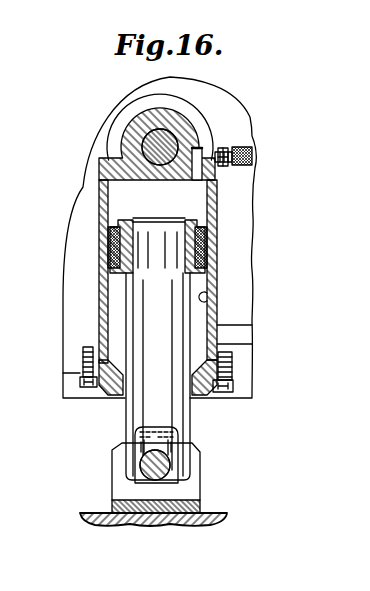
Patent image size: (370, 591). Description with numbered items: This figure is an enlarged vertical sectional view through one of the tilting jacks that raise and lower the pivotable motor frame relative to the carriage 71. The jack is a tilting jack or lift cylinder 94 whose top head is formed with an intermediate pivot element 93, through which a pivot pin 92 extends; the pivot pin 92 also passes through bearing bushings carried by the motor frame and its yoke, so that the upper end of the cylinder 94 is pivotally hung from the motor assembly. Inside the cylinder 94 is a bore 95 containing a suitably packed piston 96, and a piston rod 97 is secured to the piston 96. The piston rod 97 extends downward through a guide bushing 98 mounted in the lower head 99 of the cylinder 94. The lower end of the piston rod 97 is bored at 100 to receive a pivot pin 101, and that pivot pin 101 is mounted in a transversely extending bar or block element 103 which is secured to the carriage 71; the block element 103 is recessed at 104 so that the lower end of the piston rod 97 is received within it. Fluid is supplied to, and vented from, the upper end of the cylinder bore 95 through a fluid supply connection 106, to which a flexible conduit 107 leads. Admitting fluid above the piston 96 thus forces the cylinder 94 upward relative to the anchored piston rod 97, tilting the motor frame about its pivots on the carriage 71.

The carriage 71 is at (102, 520).
The pivot pin 92 is at (172, 143).
The intermediate pivot element 93 is at (177, 125).
The tilting jack or lift cylinder 94 is at (217, 225).
The bore 95 is at (205, 298).
The piston 96 is at (118, 240).
The piston rod 97 is at (132, 415).
The guide bushing 98 is at (213, 402).
The lower head 99 is at (227, 373).
The bore 100 is at (170, 472).
The pivot pin 101 is at (170, 483).
The transversely extending bar or block element 103 is at (192, 517).
The recess 104 is at (130, 495).
The fluid supply connection 106 is at (255, 147).
The flexible conduit 107 is at (252, 160).